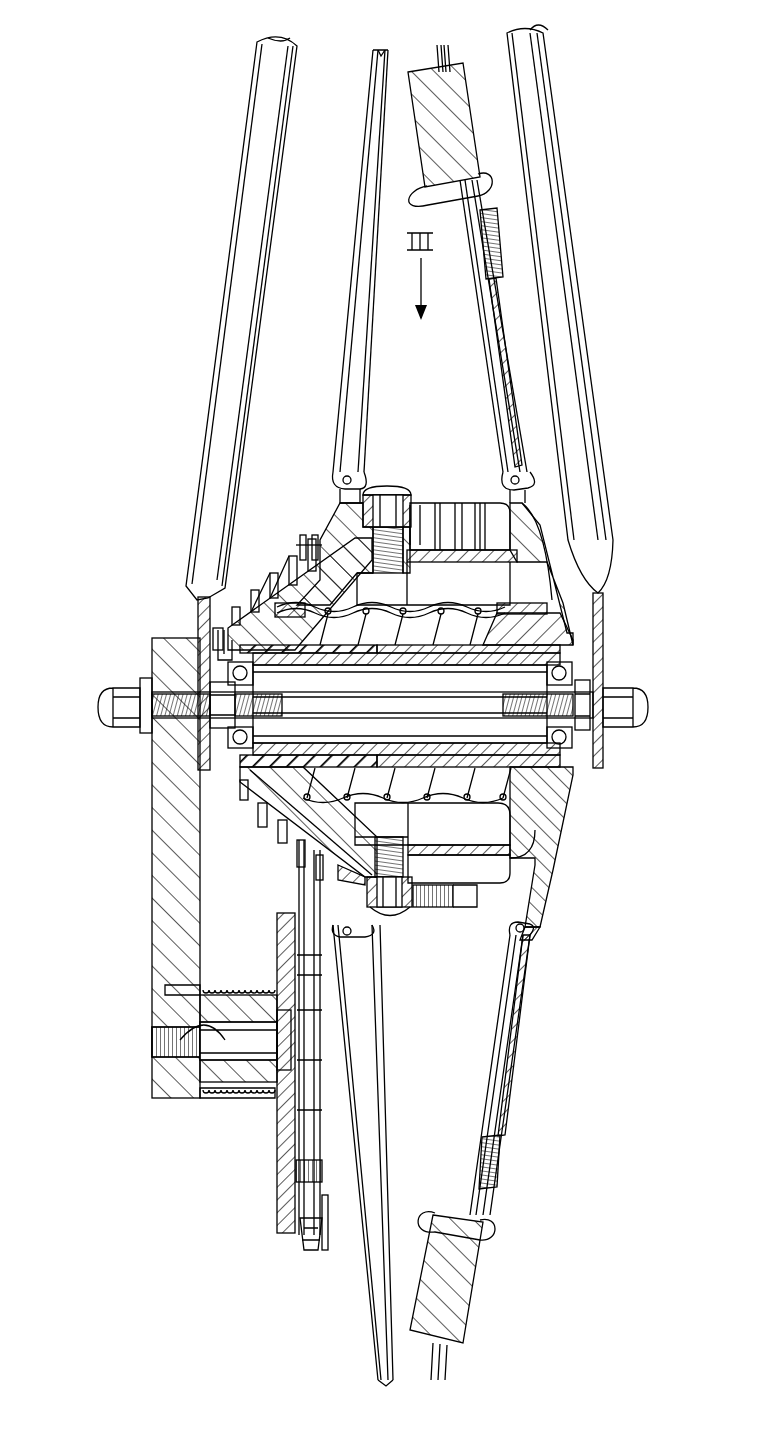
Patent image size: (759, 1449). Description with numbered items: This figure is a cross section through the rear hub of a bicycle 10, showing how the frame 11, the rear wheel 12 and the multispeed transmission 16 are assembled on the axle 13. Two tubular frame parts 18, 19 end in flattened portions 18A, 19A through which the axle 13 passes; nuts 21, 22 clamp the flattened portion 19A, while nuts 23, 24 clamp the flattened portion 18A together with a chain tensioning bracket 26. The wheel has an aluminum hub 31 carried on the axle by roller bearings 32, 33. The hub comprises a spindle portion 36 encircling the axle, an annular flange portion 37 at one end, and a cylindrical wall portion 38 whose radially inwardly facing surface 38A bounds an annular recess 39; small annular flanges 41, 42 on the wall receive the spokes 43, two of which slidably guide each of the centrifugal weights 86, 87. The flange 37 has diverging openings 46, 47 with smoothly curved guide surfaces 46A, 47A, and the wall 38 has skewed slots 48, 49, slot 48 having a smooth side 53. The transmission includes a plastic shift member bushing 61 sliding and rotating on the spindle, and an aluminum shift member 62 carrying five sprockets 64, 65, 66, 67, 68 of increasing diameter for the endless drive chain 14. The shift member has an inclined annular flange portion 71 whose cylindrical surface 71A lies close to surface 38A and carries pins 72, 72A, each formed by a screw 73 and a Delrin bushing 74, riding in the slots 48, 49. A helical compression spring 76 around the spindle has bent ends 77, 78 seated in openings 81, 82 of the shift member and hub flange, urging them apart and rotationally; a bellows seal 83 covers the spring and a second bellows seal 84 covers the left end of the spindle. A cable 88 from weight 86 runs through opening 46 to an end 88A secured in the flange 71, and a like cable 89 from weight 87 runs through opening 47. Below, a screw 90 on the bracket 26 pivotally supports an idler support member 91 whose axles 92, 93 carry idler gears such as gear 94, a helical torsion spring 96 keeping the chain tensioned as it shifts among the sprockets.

The bicycle 10 is at (160, 245).
The frame 11 is at (242, 192).
The rear wheel 12 is at (350, 283).
The axle 13 is at (98, 705).
The endless drive chain 14 is at (305, 1252).
The multispeed transmission 16 is at (256, 502).
The tubular frame part 18 is at (256, 112).
The flattened portion 18A is at (204, 735).
The tubular frame part 19 is at (537, 82).
The flattened portion 19A is at (603, 740).
The nut 21 is at (585, 690).
The nut 22 is at (636, 685).
The nut 23 is at (220, 700).
The nut 24 is at (115, 705).
The chain tensioning bracket 26 is at (165, 865).
The hub 31 is at (568, 787).
The roller bearing 32 is at (228, 738).
The roller bearing 33 is at (563, 735).
The spindle portion 36 is at (560, 645).
The annular flange portion 37 is at (565, 625).
The cylindrical wall portion 38 is at (480, 530).
The radially inwardly facing surface 38A is at (490, 895).
The annular recess 39 is at (505, 830).
The annular flange 41 is at (348, 468).
The annular flange 42 is at (520, 470).
The spoke 43 is at (368, 145).
The axial opening 46 is at (557, 590).
The guide surface portion 46A is at (545, 550).
The axial opening 47 is at (548, 815).
The guide surface portion 47A is at (525, 860).
The slot 48 is at (460, 520).
The slot 49 is at (475, 907).
The smooth side 53 is at (436, 520).
The shift member bushing 61 is at (250, 625).
The shift member 62 is at (232, 632).
The sprocket 64 is at (243, 803).
The sprocket 65 is at (260, 828).
The sprocket 66 is at (280, 845).
The sprocket 67 is at (298, 865).
The sprocket 68 is at (318, 880).
The annular flange portion 71 is at (330, 560).
The cylindrical surface 71A is at (340, 880).
The pin 72 is at (384, 485).
The pin 72A is at (390, 924).
The screw 73 is at (390, 500).
The bushing 74 is at (420, 515).
The helical compression spring 76 is at (480, 620).
The spring end 77 is at (300, 580).
The spring end 78 is at (540, 605).
The axially extending opening 81 is at (228, 625).
The axially extending opening 82 is at (520, 610).
The bellows seal 83 is at (430, 805).
The bellows seal 84 is at (222, 768).
The centrifugal weight 86 is at (447, 95).
The centrifugal weight 87 is at (465, 1285).
The cable 88 is at (510, 330).
The cable end 88A is at (330, 525).
The cable 89 is at (500, 1050).
The screw 90 is at (222, 1060).
The idler support member 91 is at (283, 1140).
The axle 92 is at (282, 966).
The axle 93 is at (298, 1178).
The idler gear 94 is at (328, 1250).
The helical torsion spring 96 is at (245, 1100).